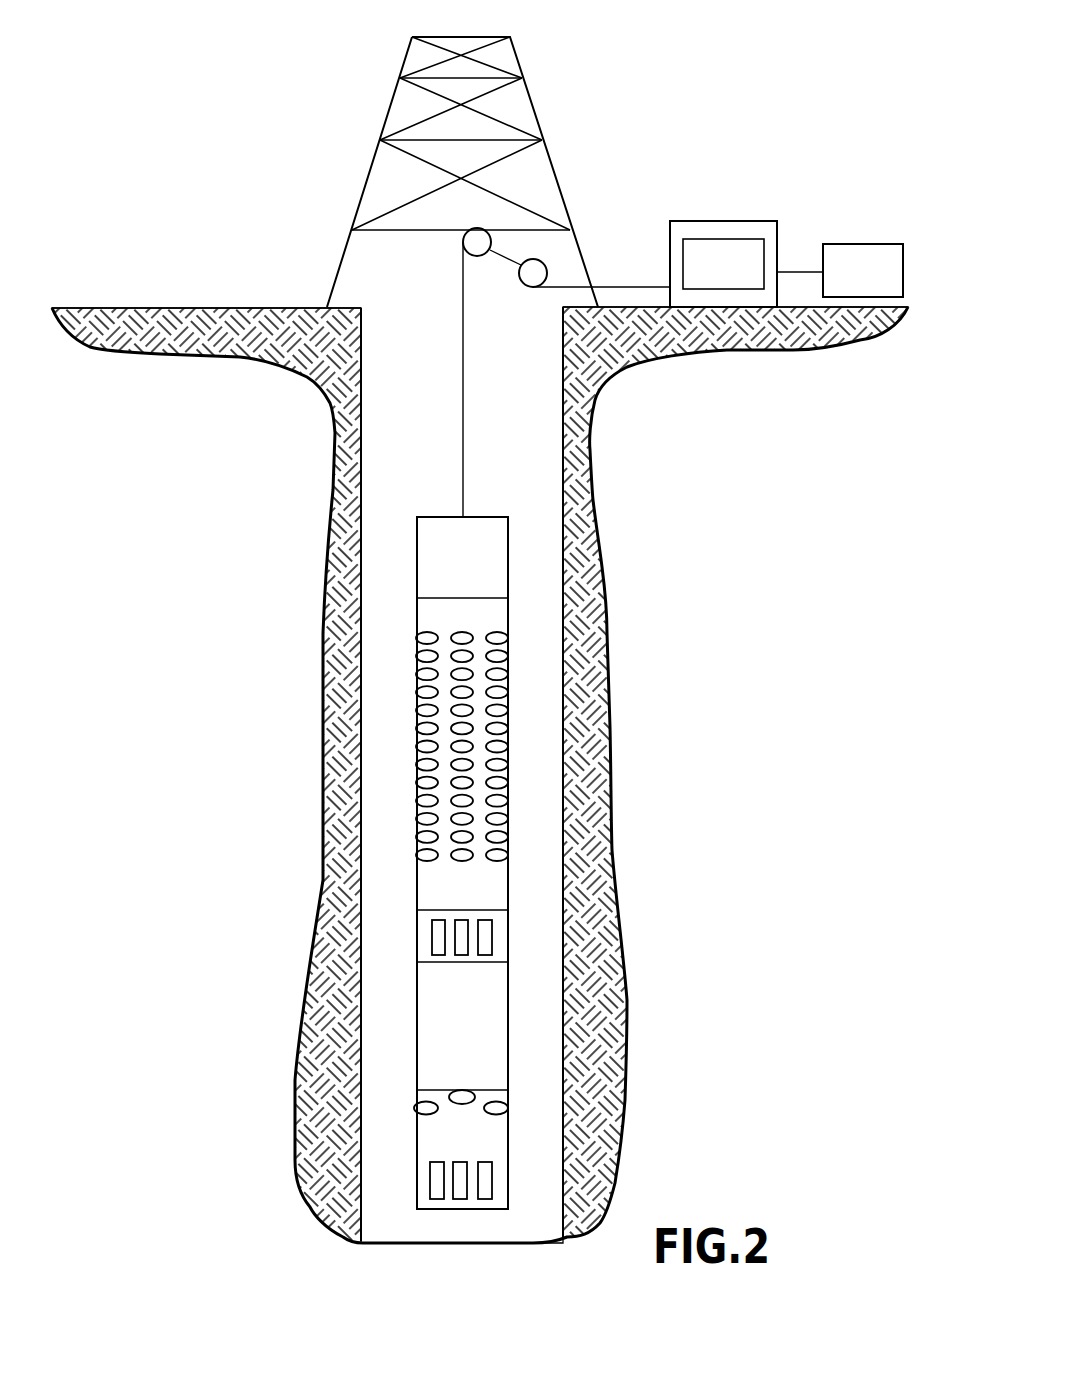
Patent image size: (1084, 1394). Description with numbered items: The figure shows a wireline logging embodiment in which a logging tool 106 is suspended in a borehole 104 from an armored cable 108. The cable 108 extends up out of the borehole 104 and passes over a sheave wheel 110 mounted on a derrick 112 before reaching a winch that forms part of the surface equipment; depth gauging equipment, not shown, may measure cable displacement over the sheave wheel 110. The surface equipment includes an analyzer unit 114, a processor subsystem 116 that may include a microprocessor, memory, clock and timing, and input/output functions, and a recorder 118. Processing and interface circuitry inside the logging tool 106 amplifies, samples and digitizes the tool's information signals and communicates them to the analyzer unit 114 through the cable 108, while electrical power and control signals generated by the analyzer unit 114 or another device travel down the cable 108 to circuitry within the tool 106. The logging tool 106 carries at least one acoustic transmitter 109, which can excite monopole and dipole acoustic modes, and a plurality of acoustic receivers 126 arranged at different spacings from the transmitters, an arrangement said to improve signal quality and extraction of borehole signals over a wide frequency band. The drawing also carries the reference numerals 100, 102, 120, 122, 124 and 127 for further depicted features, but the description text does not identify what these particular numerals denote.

The well system 100 is at (196, 218).
The subterranean formation 102 is at (337, 503).
The borehole 104 is at (437, 448).
The logging tool 106 is at (508, 560).
The armored cable 108 is at (464, 418).
The acoustic transmitter 109 is at (433, 937).
The sheave wheel 110 is at (466, 240).
The derrick 112 is at (533, 90).
The analyzer unit 114 is at (664, 257).
The processor subsystem 116 is at (743, 250).
The recorder 118 is at (880, 243).
The acoustic transducer 120 is at (456, 1092).
The acoustic transducers 122 is at (417, 1110).
The sensors 124 is at (430, 1185).
The acoustic receiver 126 is at (554, 746).
The transducer 127 is at (508, 857).